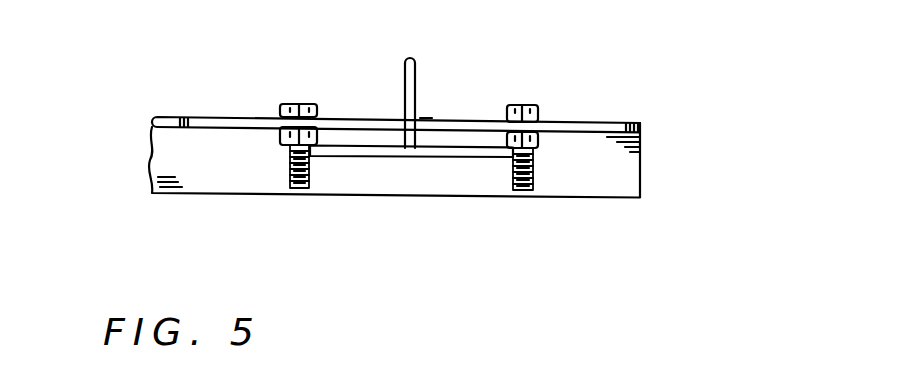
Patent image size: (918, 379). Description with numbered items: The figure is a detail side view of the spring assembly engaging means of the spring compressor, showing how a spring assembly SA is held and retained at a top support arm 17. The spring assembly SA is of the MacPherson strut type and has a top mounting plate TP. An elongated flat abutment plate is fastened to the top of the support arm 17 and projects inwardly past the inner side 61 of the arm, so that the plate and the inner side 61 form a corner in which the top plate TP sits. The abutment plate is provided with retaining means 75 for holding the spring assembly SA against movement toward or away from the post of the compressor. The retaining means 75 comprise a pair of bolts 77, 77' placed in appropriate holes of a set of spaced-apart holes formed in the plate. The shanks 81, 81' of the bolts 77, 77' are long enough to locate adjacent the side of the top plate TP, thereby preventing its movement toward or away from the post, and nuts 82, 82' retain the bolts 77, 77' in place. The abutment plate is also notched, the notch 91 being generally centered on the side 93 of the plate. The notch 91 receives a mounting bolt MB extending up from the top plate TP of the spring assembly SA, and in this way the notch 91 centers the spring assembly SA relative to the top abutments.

The top support arm 17 is at (645, 163).
The inner side of support arm 61 is at (619, 184).
The side of plate 93 is at (175, 118).
The mounting bolt MB is at (405, 68).
The notch 91 is at (425, 110).
The retaining means 75 is at (438, 72).
The bolt 77 is at (250, 92).
The bolt 77' is at (541, 73).
The nut 82 is at (195, 156).
The nut 82' is at (611, 114).
The shank 81 is at (249, 196).
The shank 81' is at (579, 198).
The top mounting plate TP is at (490, 157).
The spring assembly SA is at (435, 163).